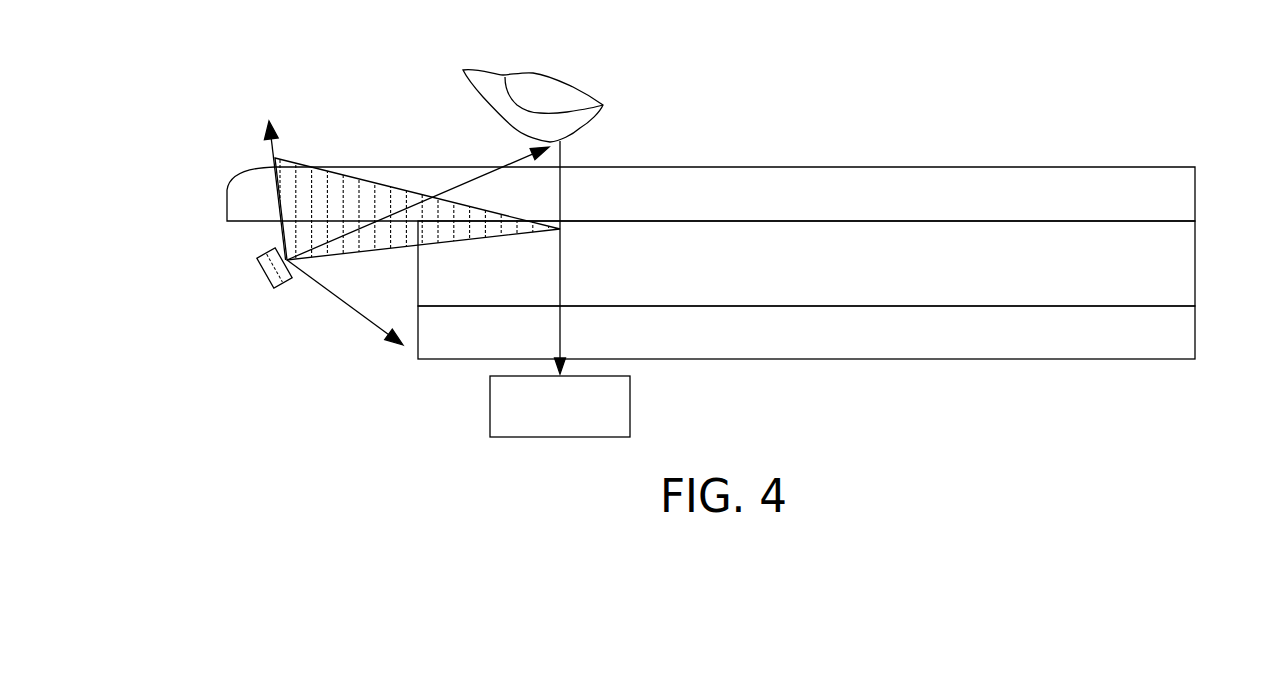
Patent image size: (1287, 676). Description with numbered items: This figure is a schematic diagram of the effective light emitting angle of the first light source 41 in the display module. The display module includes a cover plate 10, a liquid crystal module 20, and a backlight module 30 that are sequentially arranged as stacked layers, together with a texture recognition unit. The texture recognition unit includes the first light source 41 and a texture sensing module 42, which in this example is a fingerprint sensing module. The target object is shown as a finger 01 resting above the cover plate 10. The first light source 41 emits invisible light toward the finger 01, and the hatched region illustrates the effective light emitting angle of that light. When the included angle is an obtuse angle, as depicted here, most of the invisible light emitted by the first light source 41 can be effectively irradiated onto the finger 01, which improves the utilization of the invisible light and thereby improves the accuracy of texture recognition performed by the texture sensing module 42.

The finger 01 is at (557, 100).
The cover plate 10 is at (1150, 203).
The liquid crystal module 20 is at (1153, 262).
The backlight module 30 is at (1153, 333).
The first light source 41 is at (266, 272).
The texture sensing module 42 is at (598, 415).